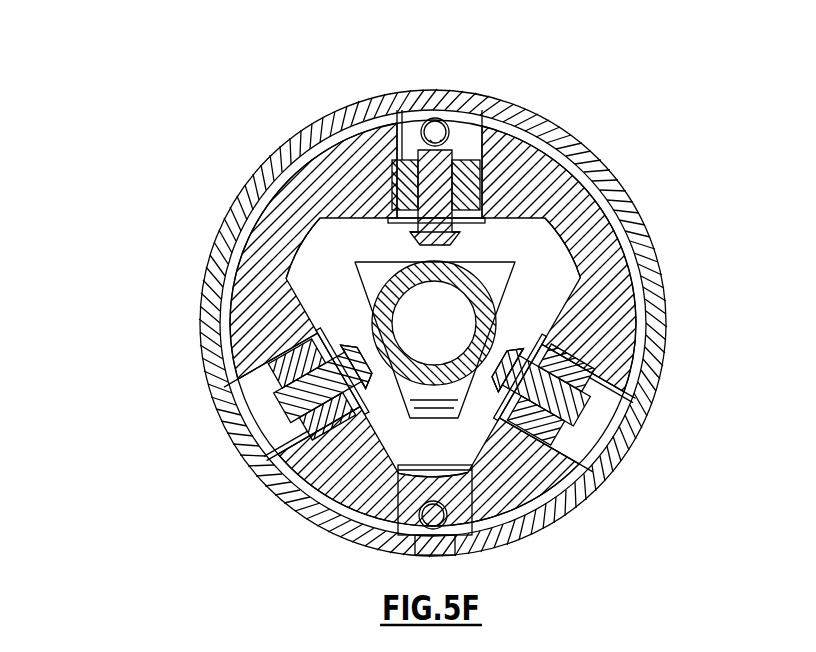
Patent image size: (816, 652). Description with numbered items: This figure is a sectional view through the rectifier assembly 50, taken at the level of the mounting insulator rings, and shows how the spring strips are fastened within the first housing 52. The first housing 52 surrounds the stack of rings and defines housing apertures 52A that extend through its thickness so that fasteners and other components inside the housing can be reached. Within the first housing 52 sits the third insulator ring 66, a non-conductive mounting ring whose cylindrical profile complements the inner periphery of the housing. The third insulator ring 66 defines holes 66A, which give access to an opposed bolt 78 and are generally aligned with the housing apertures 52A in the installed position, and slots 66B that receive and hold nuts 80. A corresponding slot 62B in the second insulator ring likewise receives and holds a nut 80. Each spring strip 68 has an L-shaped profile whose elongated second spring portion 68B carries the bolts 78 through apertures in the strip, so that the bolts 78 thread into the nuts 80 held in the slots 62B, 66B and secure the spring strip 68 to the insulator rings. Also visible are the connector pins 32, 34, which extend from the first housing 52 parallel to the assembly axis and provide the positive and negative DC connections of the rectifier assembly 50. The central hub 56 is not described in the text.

The rectifier assembly 50 is at (116, 76).
The connector pin 32 is at (378, 542).
The connector pin 34 is at (444, 125).
The first housing 52 is at (532, 106).
The housing aperture 52A is at (641, 225).
The hub 56 is at (474, 282).
The slot 62B is at (233, 412).
The third insulator ring 66 is at (566, 168).
The hole 66A is at (580, 205).
The slot 66B is at (527, 103).
The spring strip 68 is at (383, 210).
The second spring portion 68B is at (240, 355).
The bolt 78 is at (459, 160).
The nut 80 is at (403, 160).